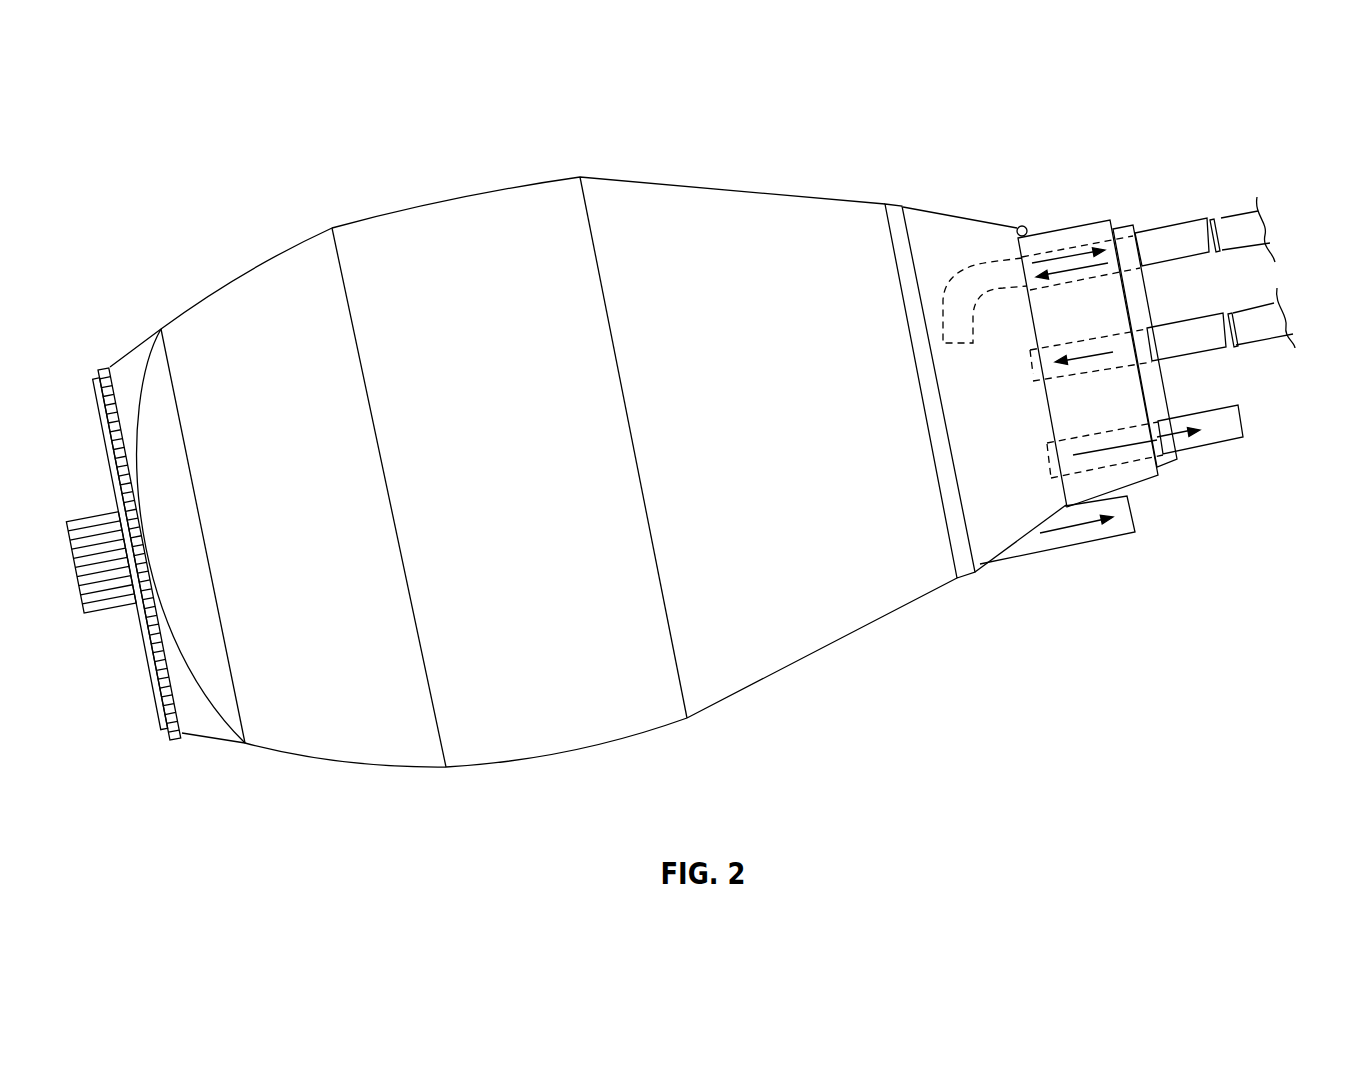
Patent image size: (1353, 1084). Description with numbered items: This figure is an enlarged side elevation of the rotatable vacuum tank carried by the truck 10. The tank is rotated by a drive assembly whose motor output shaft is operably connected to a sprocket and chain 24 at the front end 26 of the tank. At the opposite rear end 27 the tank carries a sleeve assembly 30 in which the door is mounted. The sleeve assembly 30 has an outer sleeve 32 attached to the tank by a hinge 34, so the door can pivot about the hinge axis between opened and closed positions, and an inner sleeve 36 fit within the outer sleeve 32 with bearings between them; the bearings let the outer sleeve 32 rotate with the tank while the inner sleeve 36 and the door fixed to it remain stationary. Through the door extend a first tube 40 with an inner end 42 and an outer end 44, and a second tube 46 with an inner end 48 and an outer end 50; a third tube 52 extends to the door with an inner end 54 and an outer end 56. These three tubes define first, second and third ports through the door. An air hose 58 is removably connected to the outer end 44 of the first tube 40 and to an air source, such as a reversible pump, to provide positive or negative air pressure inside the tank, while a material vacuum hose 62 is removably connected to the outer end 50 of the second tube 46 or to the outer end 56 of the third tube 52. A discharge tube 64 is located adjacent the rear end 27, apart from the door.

The truck 10 is at (433, 213).
The sprocket and chain 24 is at (103, 370).
The front end 26 is at (208, 760).
The rear end 27 is at (958, 193).
The sleeve assembly 30 is at (1056, 217).
The outer sleeve 32 is at (1078, 228).
The hinge 34 is at (1023, 227).
The inner sleeve 36 is at (1122, 228).
The first tube 40 is at (1160, 223).
The inner end 42 is at (942, 327).
The outer end 44 is at (1217, 238).
The second tube 46 is at (1172, 360).
The inner end 48 is at (1046, 381).
The outer end 50 is at (1237, 330).
The third tube 52 is at (1208, 448).
The inner end 54 is at (1047, 452).
The outer end 56 is at (1248, 418).
The air hose 58 is at (1255, 245).
The material vacuum hose 62 is at (1272, 340).
The discharge tube 64 is at (1057, 548).